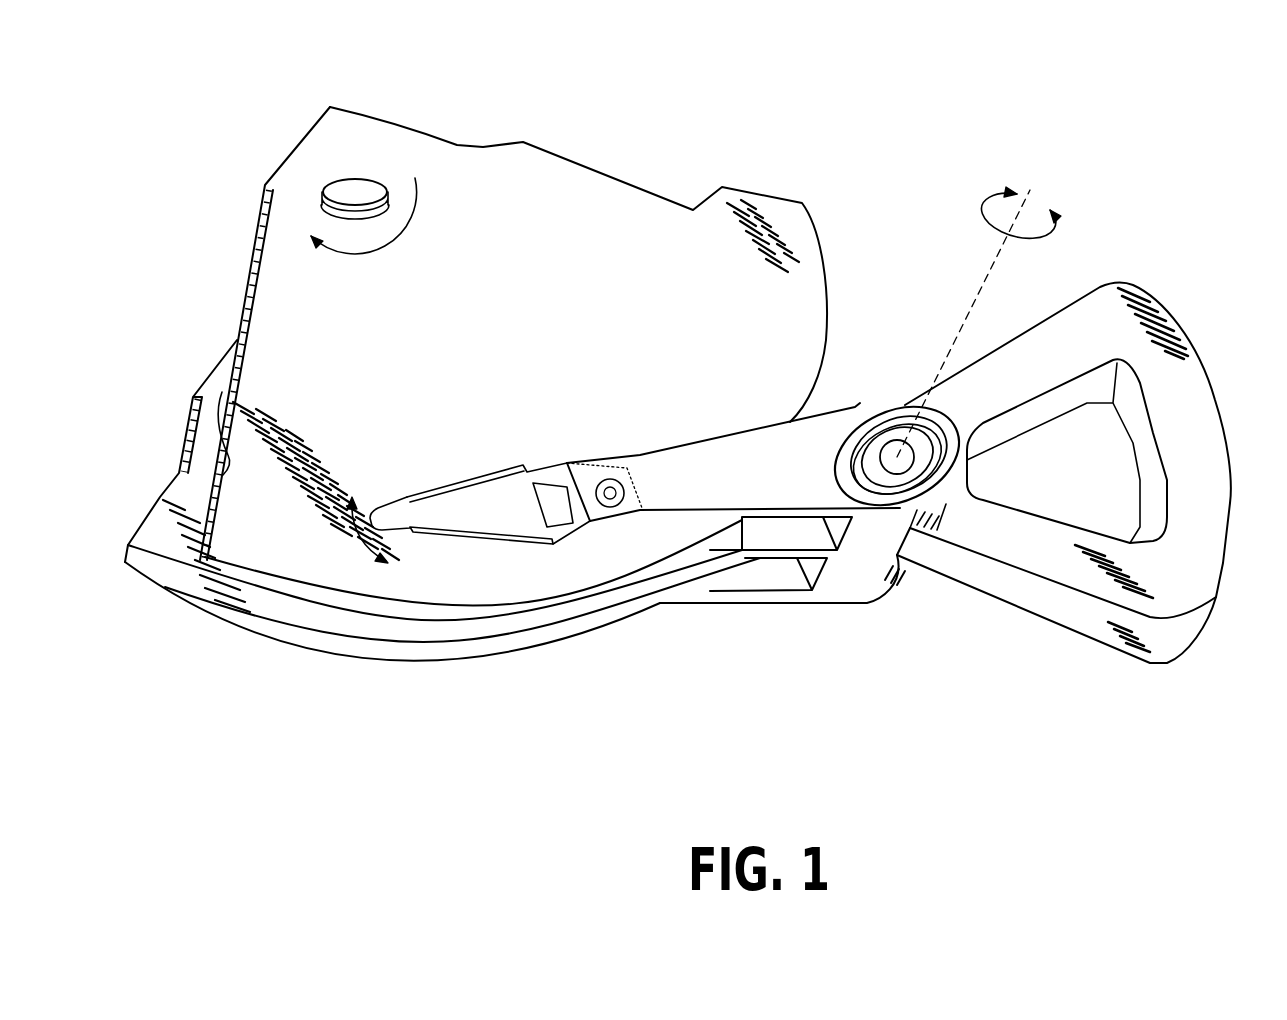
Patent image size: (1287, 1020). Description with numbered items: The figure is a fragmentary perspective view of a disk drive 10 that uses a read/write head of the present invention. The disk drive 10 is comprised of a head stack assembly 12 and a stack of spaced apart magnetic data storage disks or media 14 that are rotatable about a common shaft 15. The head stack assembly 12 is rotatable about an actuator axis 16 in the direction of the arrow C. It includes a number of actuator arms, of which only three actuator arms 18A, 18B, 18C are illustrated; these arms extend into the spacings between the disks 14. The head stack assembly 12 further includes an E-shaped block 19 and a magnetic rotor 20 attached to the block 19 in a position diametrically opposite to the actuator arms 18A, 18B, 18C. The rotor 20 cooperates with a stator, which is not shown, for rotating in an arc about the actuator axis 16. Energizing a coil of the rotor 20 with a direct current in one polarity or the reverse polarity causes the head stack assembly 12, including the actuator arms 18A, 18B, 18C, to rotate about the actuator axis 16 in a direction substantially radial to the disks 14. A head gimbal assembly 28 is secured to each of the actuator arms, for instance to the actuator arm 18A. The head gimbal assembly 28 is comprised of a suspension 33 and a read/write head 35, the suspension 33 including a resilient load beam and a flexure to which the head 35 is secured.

The disk drive 10 is at (667, 66).
The head stack assembly 12 is at (861, 645).
The magnetic data storage disks 14 is at (557, 252).
The common shaft 15 is at (338, 187).
The actuator axis 16 is at (993, 267).
The actuator arm 18A is at (757, 424).
The actuator arm 18B is at (742, 552).
The actuator arm 18C is at (773, 593).
The E-shaped block 19 is at (868, 588).
The magnetic rotor 20 is at (1043, 606).
The head gimbal assembly 28 is at (476, 458).
The suspension 33 is at (510, 525).
The read/write head 35 is at (368, 525).